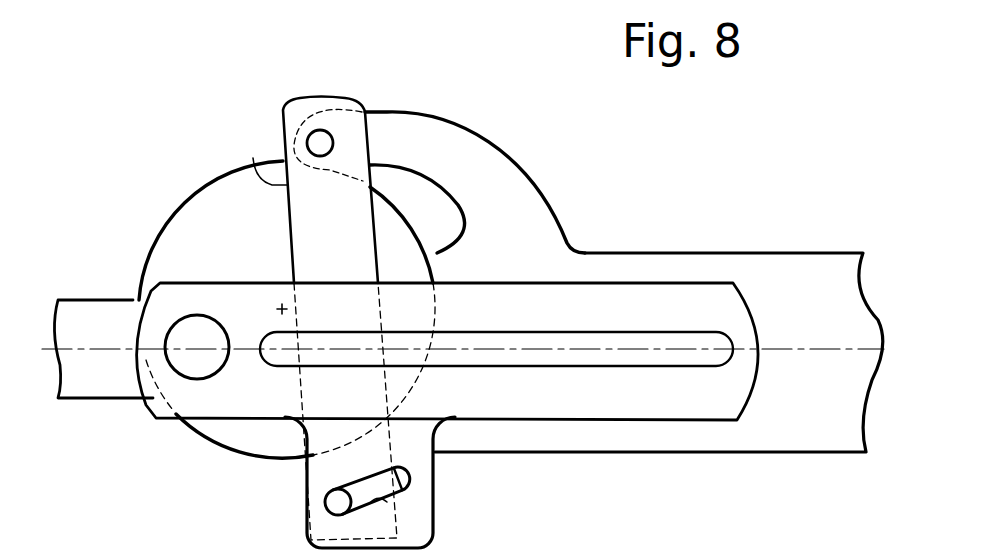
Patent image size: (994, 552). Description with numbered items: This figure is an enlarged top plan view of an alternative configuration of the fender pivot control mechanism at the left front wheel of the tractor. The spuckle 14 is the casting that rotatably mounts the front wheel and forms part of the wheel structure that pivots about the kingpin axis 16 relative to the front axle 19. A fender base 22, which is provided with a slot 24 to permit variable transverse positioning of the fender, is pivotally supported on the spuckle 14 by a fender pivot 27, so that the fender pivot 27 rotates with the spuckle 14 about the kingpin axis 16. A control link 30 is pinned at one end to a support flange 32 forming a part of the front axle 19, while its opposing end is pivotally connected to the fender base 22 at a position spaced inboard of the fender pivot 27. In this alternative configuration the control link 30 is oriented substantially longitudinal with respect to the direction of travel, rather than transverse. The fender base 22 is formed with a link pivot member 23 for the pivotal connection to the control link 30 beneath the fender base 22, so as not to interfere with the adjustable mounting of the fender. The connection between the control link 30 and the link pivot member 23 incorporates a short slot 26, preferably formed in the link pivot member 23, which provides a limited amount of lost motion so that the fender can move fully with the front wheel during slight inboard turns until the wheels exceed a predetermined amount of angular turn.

The spuckle 14 is at (237, 450).
The kingpin axis 16 is at (280, 308).
The front axle 19 is at (783, 253).
The fender base 22 is at (637, 314).
The link pivot member 23 is at (423, 463).
The slot 24 is at (520, 337).
The short slot 26 is at (393, 502).
The fender pivot 27 is at (188, 313).
The control link 30 is at (253, 158).
The support flange 32 is at (470, 133).